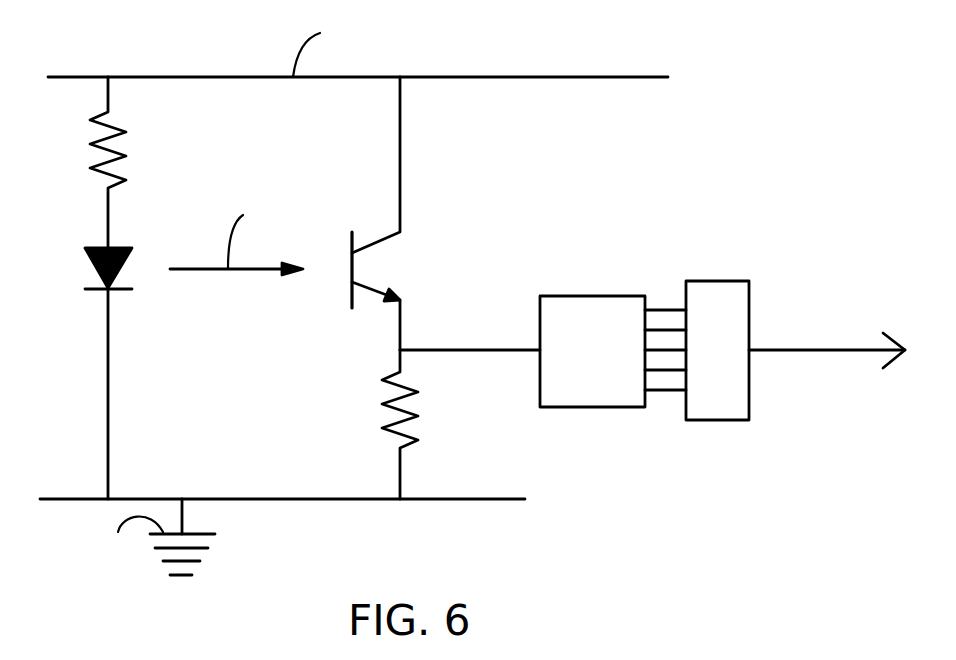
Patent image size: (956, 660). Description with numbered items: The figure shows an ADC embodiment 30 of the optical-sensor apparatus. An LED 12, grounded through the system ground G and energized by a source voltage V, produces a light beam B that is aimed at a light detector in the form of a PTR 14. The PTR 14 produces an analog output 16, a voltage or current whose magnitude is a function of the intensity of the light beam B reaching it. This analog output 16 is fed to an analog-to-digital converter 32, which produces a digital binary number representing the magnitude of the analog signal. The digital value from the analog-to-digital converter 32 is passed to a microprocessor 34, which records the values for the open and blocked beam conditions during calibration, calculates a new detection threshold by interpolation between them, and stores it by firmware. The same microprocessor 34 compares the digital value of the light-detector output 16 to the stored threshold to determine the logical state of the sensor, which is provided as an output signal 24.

The LED 12 is at (97, 250).
The PTR 14 is at (350, 255).
The analog output 16 is at (448, 352).
The output signal 24 is at (812, 350).
The ADC embodiment 30 is at (466, 291).
The analog-to-digital converter 32 is at (593, 296).
The microprocessor 34 is at (720, 281).